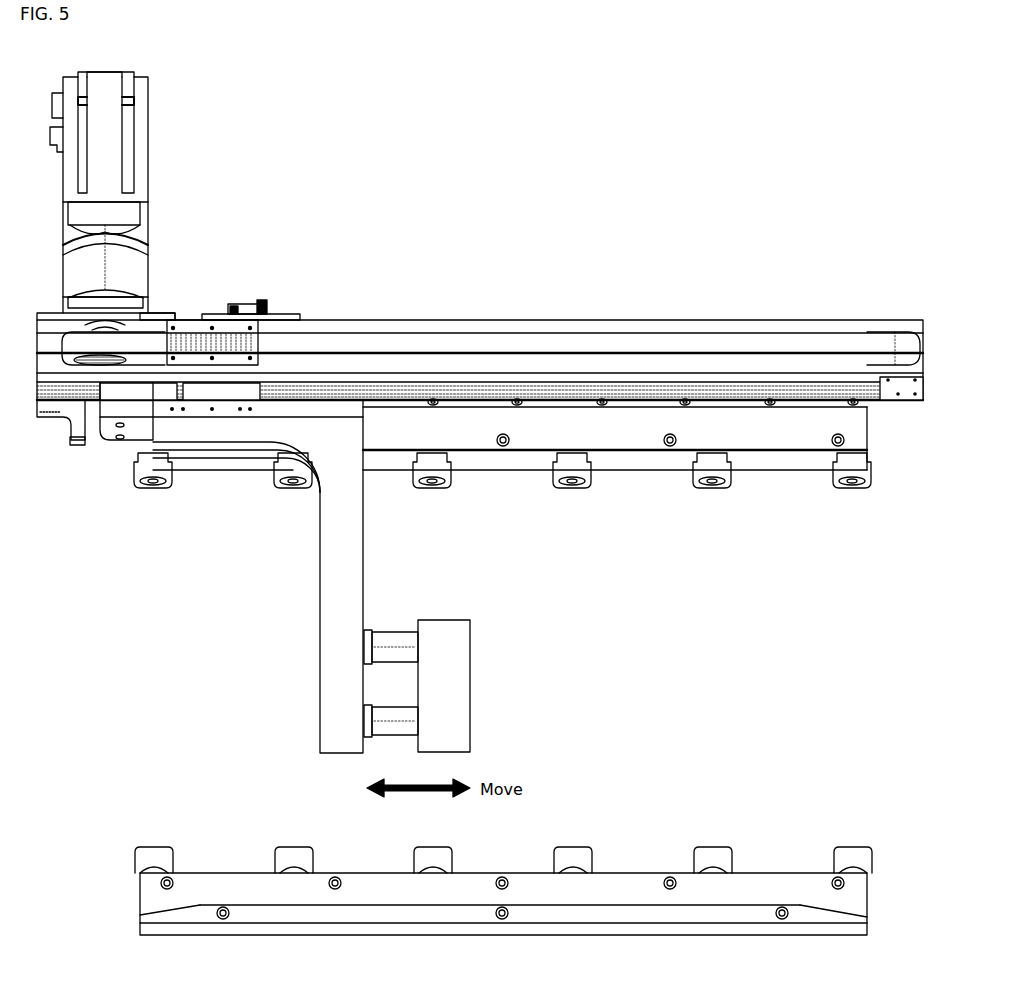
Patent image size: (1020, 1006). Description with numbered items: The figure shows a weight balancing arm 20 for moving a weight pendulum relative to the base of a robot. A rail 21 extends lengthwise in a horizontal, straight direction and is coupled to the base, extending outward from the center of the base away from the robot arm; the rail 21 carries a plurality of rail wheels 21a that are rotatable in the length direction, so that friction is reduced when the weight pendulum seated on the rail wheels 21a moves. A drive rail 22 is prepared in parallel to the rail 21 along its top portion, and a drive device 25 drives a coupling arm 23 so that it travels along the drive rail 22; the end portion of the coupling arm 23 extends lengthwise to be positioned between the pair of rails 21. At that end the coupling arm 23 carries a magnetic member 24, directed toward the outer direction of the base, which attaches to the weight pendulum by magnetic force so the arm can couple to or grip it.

The weight balancing arm 20 is at (778, 250).
The rail 21 is at (657, 476).
The rail wheels 21a is at (852, 489).
The drive rail 22 is at (432, 338).
The coupling arm 23 is at (327, 578).
The magnetic member 24 is at (455, 673).
The drive device 25 is at (130, 150).